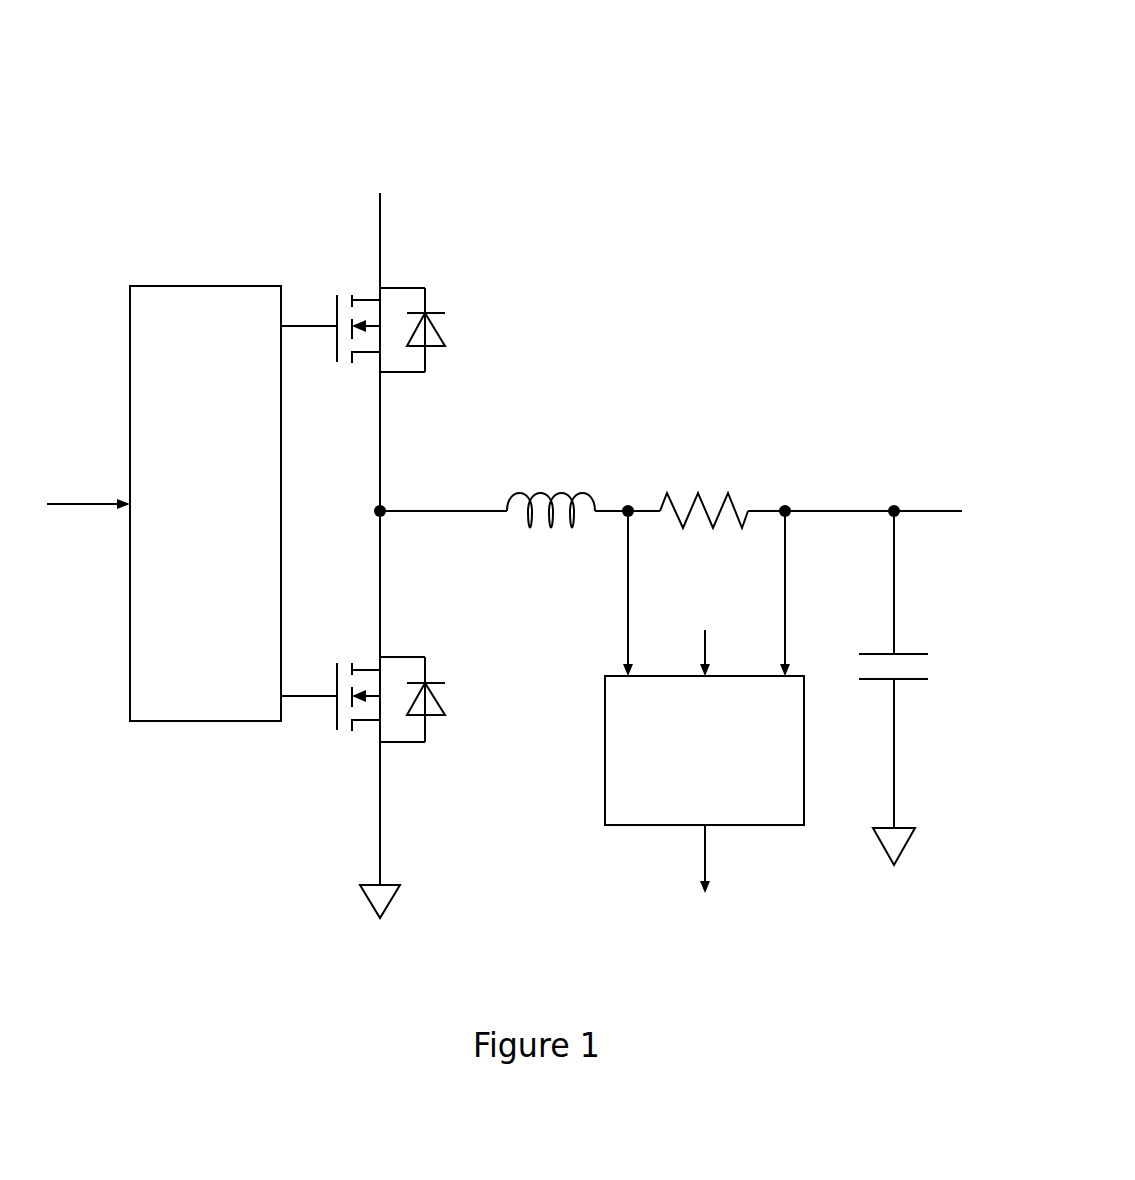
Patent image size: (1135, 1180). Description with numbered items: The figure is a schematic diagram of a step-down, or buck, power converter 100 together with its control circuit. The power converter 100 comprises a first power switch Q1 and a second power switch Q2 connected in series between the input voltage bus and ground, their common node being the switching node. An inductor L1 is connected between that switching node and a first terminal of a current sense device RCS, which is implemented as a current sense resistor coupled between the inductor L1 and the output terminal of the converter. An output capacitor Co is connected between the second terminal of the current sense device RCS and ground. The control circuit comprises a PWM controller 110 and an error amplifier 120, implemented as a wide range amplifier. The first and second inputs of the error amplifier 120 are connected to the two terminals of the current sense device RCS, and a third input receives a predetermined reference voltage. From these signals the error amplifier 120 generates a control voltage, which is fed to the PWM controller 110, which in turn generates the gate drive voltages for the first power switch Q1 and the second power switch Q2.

The power converter 100 is at (811, 135).
The PWM controller 110 is at (225, 566).
The error amplifier 120 is at (723, 781).
The first power switch Q1 is at (363, 349).
The second power switch Q2 is at (363, 718).
The inductor L1 is at (551, 494).
The current sense device RCS is at (704, 496).
The output capacitor Co is at (897, 688).